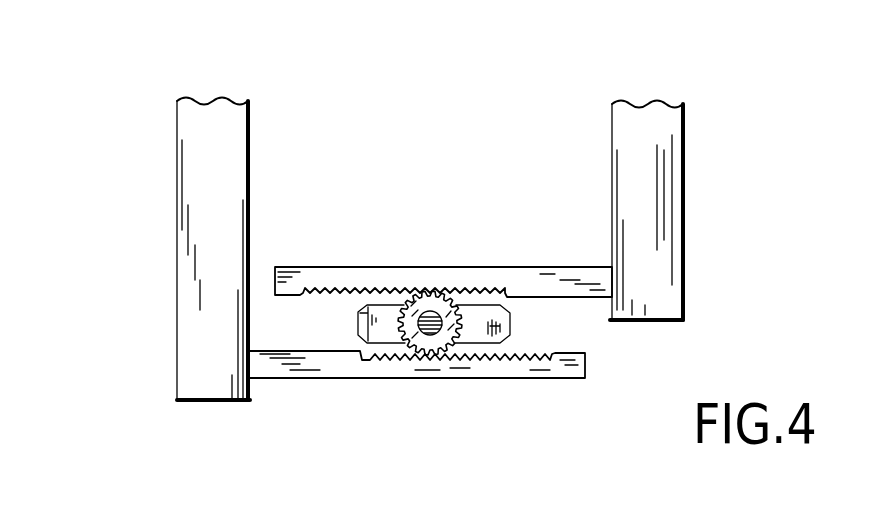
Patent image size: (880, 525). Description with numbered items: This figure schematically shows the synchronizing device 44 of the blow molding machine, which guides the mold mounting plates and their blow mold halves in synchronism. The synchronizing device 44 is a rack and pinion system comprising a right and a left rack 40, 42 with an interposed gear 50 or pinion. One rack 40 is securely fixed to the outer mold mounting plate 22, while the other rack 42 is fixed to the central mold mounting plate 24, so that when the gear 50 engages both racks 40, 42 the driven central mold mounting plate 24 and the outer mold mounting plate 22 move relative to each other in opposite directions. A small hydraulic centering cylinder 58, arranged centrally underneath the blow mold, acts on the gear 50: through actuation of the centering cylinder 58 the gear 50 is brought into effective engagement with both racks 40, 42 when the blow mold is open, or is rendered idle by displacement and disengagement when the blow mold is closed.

The mold mounting plate 22 is at (194, 158).
The central mold mounting plate 24 is at (665, 178).
The rack 40 is at (348, 275).
The rack 42 is at (317, 370).
The synchronizing device 44 is at (513, 160).
The gear 50 is at (432, 326).
The centering cylinder 58 is at (510, 328).